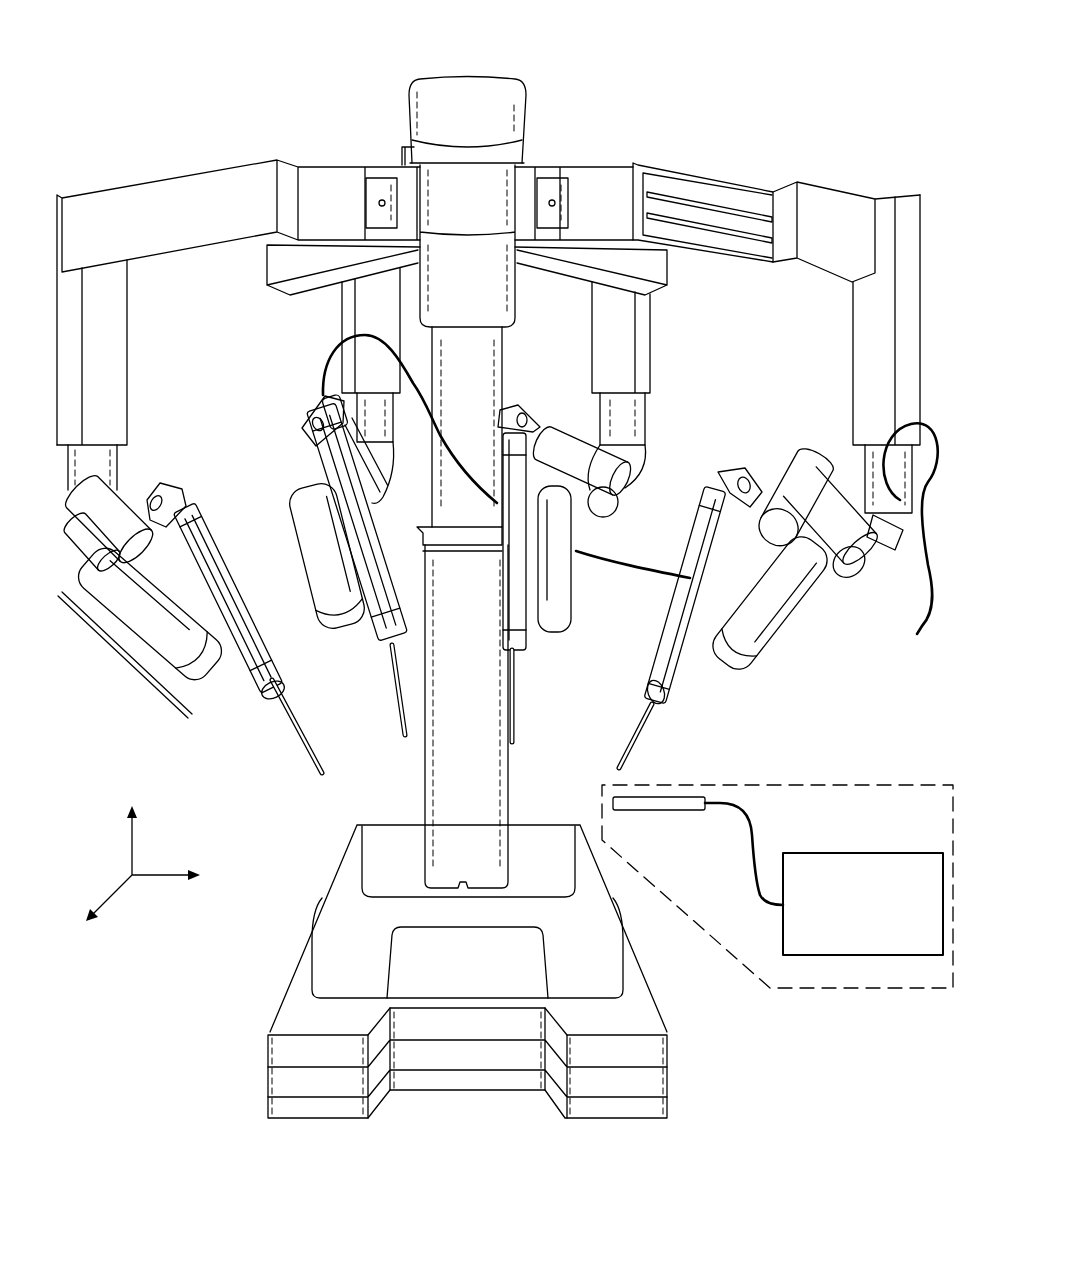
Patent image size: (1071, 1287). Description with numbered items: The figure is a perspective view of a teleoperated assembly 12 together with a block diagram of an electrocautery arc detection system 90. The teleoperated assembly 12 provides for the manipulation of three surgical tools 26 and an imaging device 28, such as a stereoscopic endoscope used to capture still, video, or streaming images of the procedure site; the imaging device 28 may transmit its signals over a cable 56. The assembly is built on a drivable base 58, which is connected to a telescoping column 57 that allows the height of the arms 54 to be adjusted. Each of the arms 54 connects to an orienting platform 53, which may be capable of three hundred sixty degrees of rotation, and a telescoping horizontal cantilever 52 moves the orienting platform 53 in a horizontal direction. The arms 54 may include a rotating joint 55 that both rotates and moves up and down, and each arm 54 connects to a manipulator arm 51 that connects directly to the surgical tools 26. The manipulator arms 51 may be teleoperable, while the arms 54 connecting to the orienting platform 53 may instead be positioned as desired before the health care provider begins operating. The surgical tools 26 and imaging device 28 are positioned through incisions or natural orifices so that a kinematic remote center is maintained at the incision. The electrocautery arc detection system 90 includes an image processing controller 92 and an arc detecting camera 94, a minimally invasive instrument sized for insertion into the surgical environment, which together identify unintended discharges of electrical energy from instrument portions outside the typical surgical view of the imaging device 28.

The teleoperated assembly 12 is at (250, 75).
The surgical tools 26 is at (230, 599).
The imaging device 28 is at (397, 693).
The manipulator arm 51 is at (122, 660).
The telescoping horizontal cantilever 52 is at (489, 80).
The orienting platform 53 is at (455, 185).
The arms 54 is at (881, 167).
The rotating joint 55 is at (915, 495).
The cable 56 is at (930, 580).
The telescoping column 57 is at (433, 778).
The drivable base 58 is at (288, 1010).
The electrocautery arc detection system 90 is at (864, 995).
The image processing controller 92 is at (863, 853).
The arc detecting camera 94 is at (663, 815).